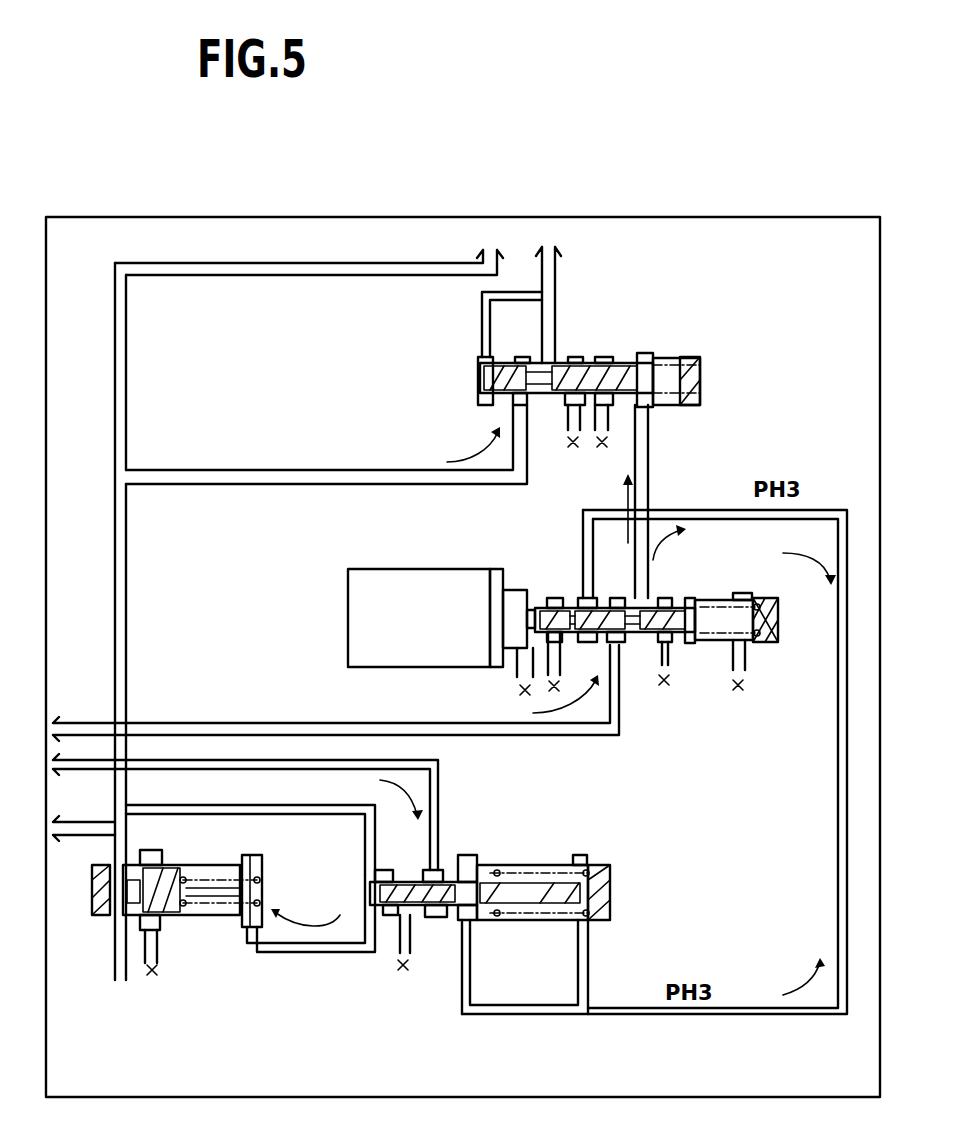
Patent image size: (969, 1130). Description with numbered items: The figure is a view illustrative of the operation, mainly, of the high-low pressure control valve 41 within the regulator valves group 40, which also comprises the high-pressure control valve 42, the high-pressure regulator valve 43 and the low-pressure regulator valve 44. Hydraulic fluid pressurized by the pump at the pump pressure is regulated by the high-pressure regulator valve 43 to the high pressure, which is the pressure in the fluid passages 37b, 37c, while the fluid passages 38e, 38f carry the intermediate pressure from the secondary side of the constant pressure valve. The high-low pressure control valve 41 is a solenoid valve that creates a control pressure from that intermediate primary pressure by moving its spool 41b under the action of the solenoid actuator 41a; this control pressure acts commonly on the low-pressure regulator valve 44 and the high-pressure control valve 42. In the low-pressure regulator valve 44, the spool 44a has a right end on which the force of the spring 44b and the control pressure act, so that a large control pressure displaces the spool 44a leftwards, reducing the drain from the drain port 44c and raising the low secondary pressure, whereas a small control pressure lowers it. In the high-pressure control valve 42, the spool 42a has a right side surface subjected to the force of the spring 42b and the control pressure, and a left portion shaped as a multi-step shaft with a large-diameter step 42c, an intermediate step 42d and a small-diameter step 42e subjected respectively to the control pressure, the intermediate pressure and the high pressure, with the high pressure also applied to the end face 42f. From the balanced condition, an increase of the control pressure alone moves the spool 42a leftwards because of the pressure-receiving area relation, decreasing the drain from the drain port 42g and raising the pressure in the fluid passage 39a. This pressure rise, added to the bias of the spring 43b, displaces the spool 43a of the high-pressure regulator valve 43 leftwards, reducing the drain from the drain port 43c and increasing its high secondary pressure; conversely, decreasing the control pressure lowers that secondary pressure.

The regulator valves group 40 is at (762, 216).
The fluid passage 37b is at (127, 577).
The fluid passage 37c is at (385, 470).
The fluid passage 38e is at (300, 722).
The fluid passage 38f is at (440, 772).
The fluid passage 39a is at (320, 950).
The high-low pressure control valve 41 is at (509, 645).
The solenoid actuator 41a is at (348, 625).
The spool 41b is at (683, 600).
The high-pressure control valve 42 is at (446, 934).
The spool 42a is at (530, 880).
The spring 42b is at (577, 858).
The large-diameter step 42c is at (462, 921).
The intermediate step 42d is at (437, 917).
The small-diameter step 42e is at (390, 950).
The end face 42f is at (366, 915).
The drain port 42g is at (403, 978).
The high-pressure regulator valve 43 is at (220, 926).
The spool 43a is at (227, 863).
The spring 43b is at (267, 887).
The drain port 43c is at (162, 950).
The low-pressure regulator valve 44 is at (656, 422).
The spool 44a is at (627, 363).
The spring 44b is at (690, 358).
The drain port 44c is at (603, 418).